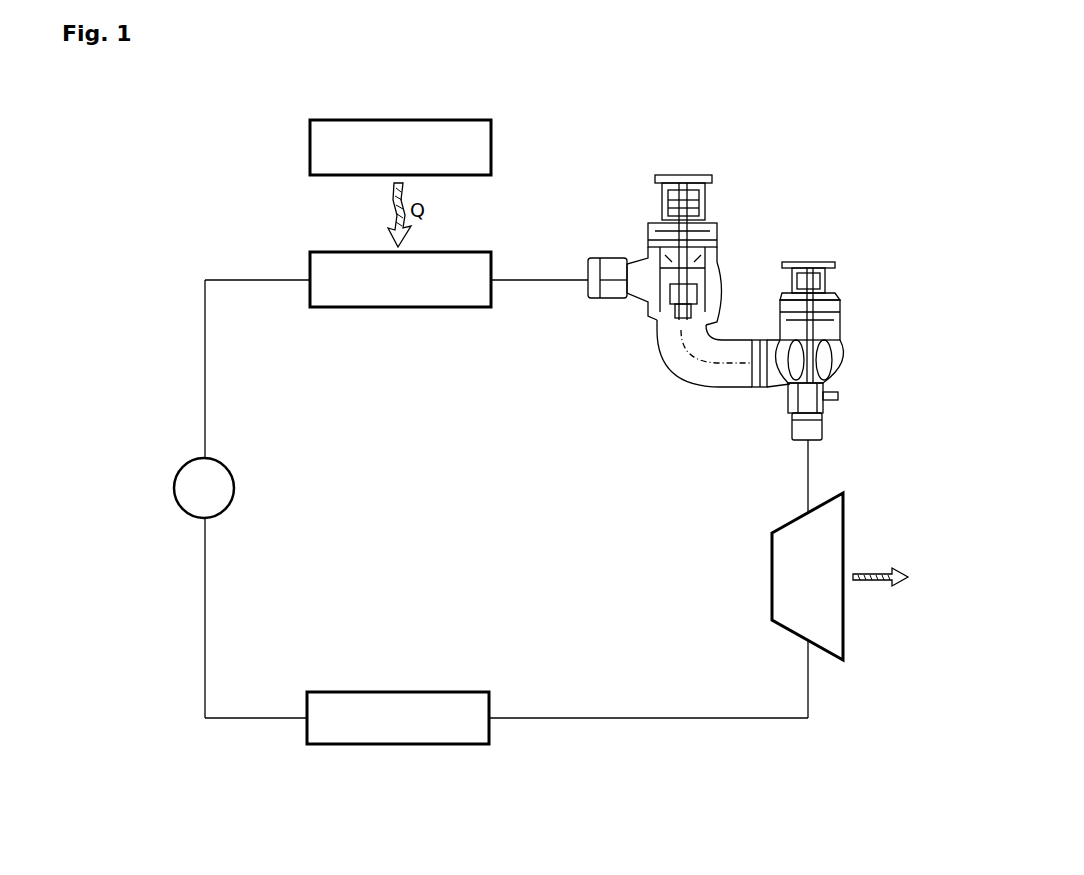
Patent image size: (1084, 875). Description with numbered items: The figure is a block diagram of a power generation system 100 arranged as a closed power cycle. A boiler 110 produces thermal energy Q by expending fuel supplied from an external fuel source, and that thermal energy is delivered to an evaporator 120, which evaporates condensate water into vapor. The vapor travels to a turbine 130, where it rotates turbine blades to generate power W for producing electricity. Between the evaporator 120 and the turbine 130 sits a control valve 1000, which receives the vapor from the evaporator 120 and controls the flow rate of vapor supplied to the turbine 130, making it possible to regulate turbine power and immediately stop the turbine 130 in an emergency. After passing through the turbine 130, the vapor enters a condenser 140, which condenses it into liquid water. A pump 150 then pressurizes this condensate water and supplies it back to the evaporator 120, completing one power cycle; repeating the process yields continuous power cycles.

The power generation system 100 is at (187, 136).
The boiler 110 is at (491, 144).
The evaporator 120 is at (432, 307).
The turbine 130 is at (845, 522).
The condenser 140 is at (428, 744).
The pump 150 is at (174, 484).
The control valve 1000 is at (771, 217).